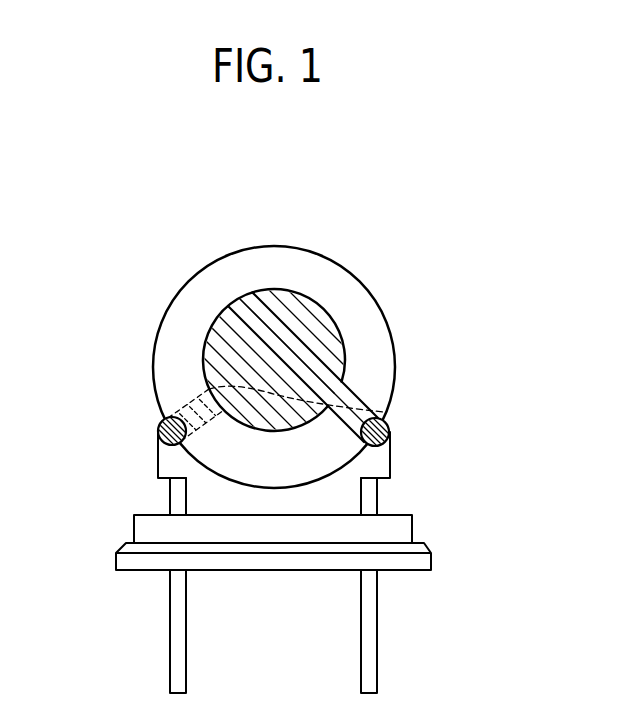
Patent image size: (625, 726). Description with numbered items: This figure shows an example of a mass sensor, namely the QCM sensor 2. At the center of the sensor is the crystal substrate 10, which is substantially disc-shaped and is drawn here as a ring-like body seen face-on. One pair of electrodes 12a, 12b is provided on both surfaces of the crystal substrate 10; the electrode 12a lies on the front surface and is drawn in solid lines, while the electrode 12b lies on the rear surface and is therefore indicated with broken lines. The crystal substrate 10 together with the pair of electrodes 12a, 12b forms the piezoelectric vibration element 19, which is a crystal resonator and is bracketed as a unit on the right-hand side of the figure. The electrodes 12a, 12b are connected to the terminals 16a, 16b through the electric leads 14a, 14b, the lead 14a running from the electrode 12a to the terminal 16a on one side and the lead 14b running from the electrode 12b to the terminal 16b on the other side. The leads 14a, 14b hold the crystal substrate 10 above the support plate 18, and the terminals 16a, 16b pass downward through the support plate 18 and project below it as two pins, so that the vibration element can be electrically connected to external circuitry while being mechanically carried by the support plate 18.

The QCM sensor 2 is at (470, 212).
The crystal substrate 10 is at (388, 337).
The electrode 12a is at (341, 381).
The electrode 12b is at (383, 412).
The piezoelectric vibration element 19 is at (498, 315).
The electric lead 14a is at (390, 445).
The electric lead 14b is at (158, 455).
The terminal 16a is at (377, 497).
The terminal 16b is at (178, 496).
The support plate 18 is at (422, 562).